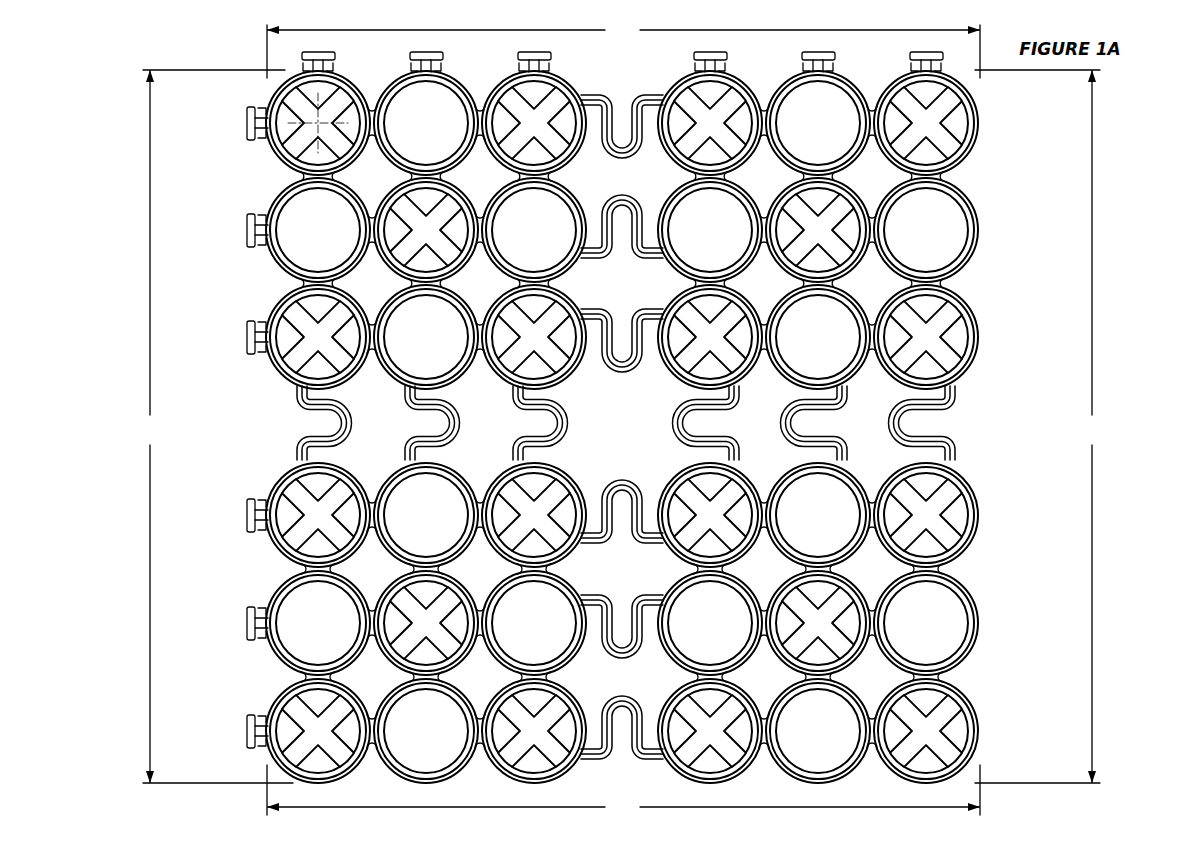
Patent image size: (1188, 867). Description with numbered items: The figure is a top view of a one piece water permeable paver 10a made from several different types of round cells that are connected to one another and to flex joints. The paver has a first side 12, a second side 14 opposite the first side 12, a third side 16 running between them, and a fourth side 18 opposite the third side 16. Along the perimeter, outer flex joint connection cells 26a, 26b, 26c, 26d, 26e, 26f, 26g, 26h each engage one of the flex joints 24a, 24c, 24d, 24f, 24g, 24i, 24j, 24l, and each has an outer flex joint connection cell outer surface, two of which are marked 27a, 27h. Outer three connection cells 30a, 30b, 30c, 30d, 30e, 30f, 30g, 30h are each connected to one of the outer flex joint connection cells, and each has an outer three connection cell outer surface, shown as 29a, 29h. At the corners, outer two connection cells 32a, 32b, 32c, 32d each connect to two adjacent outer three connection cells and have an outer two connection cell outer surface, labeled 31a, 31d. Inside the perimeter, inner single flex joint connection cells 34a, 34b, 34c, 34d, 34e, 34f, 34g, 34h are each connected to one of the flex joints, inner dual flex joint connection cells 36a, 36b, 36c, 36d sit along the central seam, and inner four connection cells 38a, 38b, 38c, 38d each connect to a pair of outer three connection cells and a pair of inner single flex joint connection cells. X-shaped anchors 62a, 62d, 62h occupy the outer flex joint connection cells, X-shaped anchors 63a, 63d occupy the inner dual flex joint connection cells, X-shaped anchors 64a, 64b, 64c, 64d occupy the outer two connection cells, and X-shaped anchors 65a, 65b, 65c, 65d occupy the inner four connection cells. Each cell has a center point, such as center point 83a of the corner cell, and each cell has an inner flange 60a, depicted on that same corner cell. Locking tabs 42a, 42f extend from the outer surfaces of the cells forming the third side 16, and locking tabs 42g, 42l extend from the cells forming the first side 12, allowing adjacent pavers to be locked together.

The one piece water permeable paver 10a is at (130, 73).
The first side 12 is at (215, 426).
The second side 14 is at (1039, 426).
The third side 16 is at (623, 49).
The fourth side 18 is at (623, 791).
The flex joint 24a is at (640, 369).
The flex joint 24c is at (625, 158).
The flex joint 24d is at (680, 441).
The flex joint 24f is at (887, 428).
The flex joint 24g is at (606, 481).
The flex joint 24i is at (628, 696).
The flex joint 24j is at (552, 413).
The flex joint 24l is at (347, 421).
The outer flex joint connection cell 26a is at (546, 108).
The outer flex joint connection cell 26b is at (680, 78).
The outer flex joint connection cell 26c is at (963, 372).
The outer flex joint connection cell 26d is at (963, 482).
The outer flex joint connection cell 26e is at (713, 736).
The outer flex joint connection cell 26f is at (537, 736).
The outer flex joint connection cell 26g is at (278, 482).
The outer flex joint connection cell 26h is at (290, 341).
The outer flex joint connection cell outer surface 27a is at (546, 108).
The outer flex joint connection cell outer surface 27h is at (290, 337).
The outer three connection cell outer surface 29a is at (397, 72).
The outer three connection cell outer surface 29h is at (270, 198).
The outer three connection cell 30a is at (427, 108).
The outer three connection cell 30b is at (805, 78).
The outer three connection cell 30c is at (963, 266).
The outer three connection cell 30d is at (963, 592).
The outer three connection cell 30e is at (823, 736).
The outer three connection cell 30f is at (455, 777).
The outer three connection cell 30g is at (278, 592).
The outer three connection cell 30h is at (297, 235).
The outer two connection cell outer surface 31a is at (306, 129).
The outer two connection cell outer surface 31d is at (288, 731).
The outer two connection cell 32a is at (297, 118).
The outer two connection cell 32b is at (932, 118).
The outer two connection cell 32c is at (929, 728).
The outer two connection cell 32d is at (292, 743).
The inner single flex joint connection cell 34a is at (569, 196).
The inner single flex joint connection cell 34b is at (740, 186).
The inner single flex joint connection cell 34c is at (860, 370).
The inner single flex joint connection cell 34d is at (852, 482).
The inner single flex joint connection cell 34e is at (742, 665).
The inner single flex joint connection cell 34f is at (537, 724).
The inner single flex joint connection cell 34g is at (380, 483).
The inner single flex joint connection cell 34h is at (348, 382).
The inner dual flex joint connection cell 36a is at (536, 234).
The inner dual flex joint connection cell 36b is at (719, 228).
The inner dual flex joint connection cell 36c is at (742, 592).
The inner dual flex joint connection cell 36d is at (460, 594).
The inner four connection cell 38a is at (425, 231).
The inner four connection cell 38b is at (845, 186).
The inner four connection cell 38c is at (852, 665).
The inner four connection cell 38d is at (382, 662).
The locking tab 42a is at (320, 52).
The locking tab 42f is at (921, 53).
The locking tab 42g is at (243, 122).
The locking tab 42l is at (245, 730).
The inner flange 60a is at (297, 129).
The X-shaped anchor 62a is at (560, 140).
The X-shaped anchor 62d is at (557, 707).
The X-shaped anchor 62h is at (305, 333).
The X-shaped anchor 63a is at (553, 312).
The X-shaped anchor 63d is at (516, 497).
The X-shaped anchor 64a is at (297, 129).
The X-shaped anchor 64b is at (947, 143).
The X-shaped anchor 64c is at (948, 742).
The X-shaped anchor 64d is at (310, 747).
The X-shaped anchor 65a is at (447, 205).
The X-shaped anchor 65b is at (826, 229).
The X-shaped anchor 65c is at (835, 603).
The X-shaped anchor 65d is at (416, 625).
The center point 83a is at (311, 131).